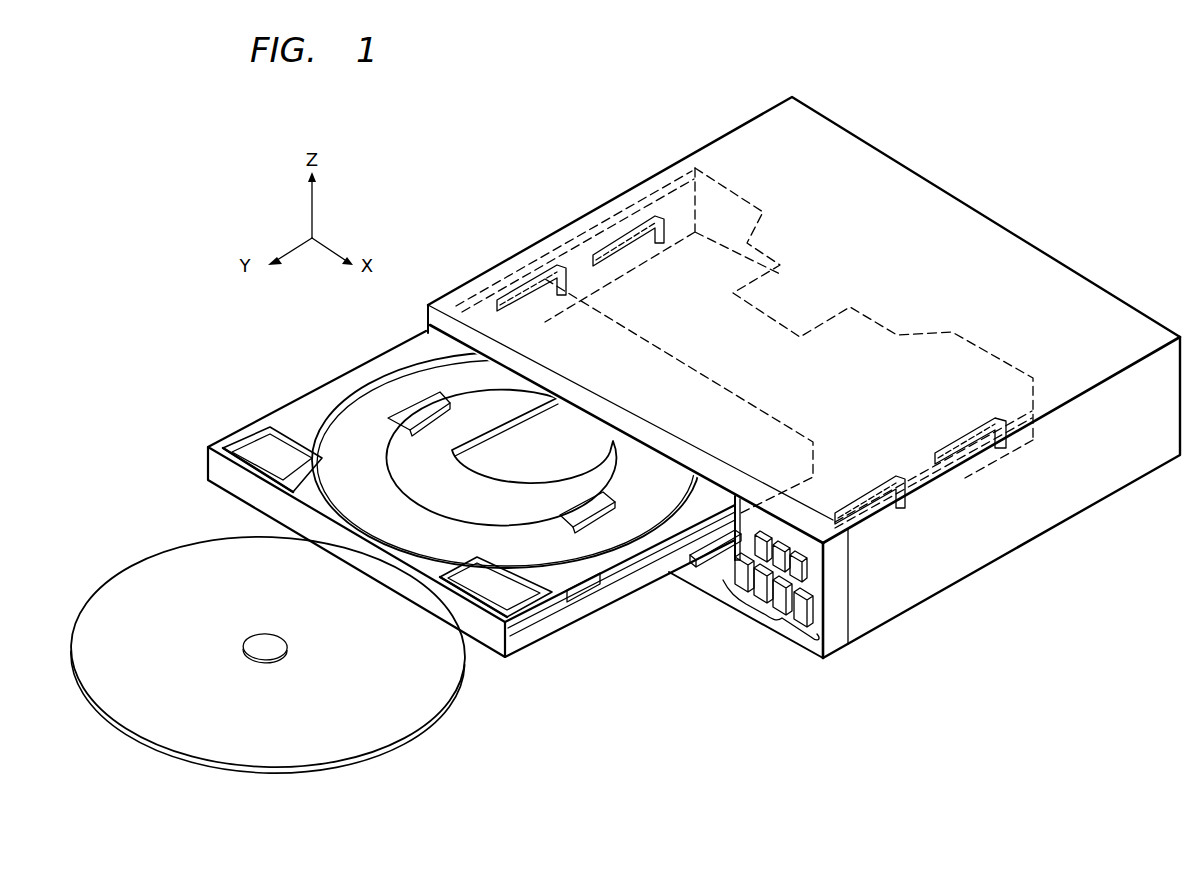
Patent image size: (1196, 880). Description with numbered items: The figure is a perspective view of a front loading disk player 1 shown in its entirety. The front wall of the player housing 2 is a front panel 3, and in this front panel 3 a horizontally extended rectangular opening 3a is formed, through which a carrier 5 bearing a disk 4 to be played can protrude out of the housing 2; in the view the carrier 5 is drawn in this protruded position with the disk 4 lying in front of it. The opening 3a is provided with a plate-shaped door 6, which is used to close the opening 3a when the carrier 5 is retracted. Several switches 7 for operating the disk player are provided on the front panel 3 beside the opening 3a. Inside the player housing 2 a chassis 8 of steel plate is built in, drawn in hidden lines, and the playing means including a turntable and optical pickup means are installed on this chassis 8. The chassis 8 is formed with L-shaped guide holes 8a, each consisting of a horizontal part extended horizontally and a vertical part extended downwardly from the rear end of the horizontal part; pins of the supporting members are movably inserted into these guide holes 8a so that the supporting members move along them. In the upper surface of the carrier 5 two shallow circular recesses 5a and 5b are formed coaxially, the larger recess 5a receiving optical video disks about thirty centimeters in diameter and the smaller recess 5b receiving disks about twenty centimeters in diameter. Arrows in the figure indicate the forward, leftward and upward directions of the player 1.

The front loading disk player 1 is at (501, 132).
The player housing 2 is at (703, 140).
The front panel 3 is at (778, 528).
The rectangular opening 3a is at (733, 538).
The disk 4 is at (433, 700).
The carrier 5 is at (276, 404).
The circular recess 5a is at (581, 544).
The circular recess 5b is at (536, 504).
The door 6 is at (693, 555).
The switches 7 is at (771, 620).
The chassis 8 is at (985, 428).
The L-shaped guide holes 8a is at (640, 222).